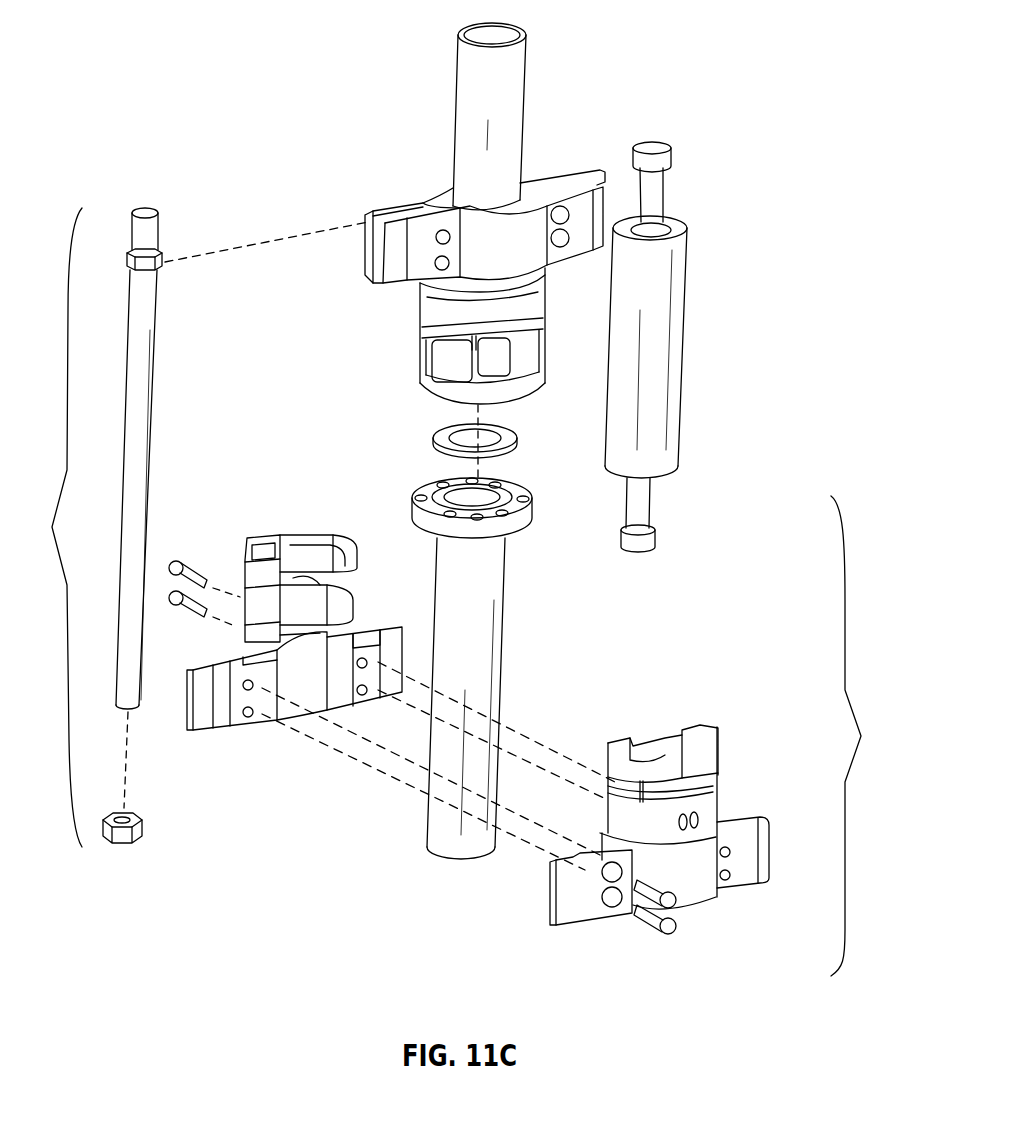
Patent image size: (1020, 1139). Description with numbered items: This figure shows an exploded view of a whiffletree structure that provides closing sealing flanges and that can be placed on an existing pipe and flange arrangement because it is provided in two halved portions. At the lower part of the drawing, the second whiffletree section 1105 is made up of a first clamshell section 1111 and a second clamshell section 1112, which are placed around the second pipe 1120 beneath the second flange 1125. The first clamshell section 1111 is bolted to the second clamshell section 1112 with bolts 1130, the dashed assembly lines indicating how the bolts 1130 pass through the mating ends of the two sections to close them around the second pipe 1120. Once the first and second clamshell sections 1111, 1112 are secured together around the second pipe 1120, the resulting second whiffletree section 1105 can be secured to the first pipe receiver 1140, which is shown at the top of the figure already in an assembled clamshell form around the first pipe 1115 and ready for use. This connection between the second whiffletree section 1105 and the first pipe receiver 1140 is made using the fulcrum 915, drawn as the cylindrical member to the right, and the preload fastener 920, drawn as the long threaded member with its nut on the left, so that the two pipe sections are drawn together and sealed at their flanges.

The first pipe 1115 is at (510, 92).
The first pipe receiver 1140 is at (517, 242).
The fulcrum 915 is at (661, 382).
The second flange 1125 is at (513, 523).
The second pipe 1120 is at (487, 668).
The preload fastener 920 is at (187, 527).
The bolts 1130 is at (177, 558).
The first clamshell section 1111 is at (221, 720).
The second clamshell section 1112 is at (743, 822).
The second whiffletree section 1105 is at (875, 736).